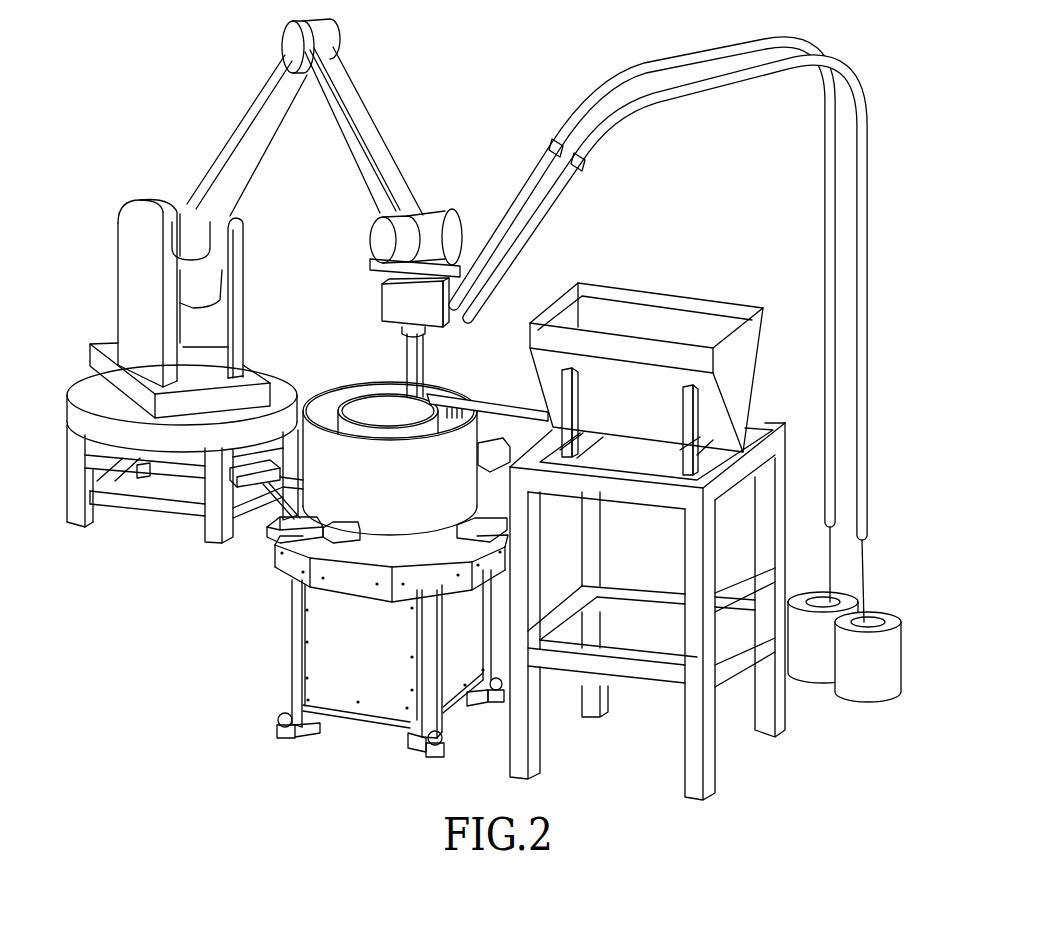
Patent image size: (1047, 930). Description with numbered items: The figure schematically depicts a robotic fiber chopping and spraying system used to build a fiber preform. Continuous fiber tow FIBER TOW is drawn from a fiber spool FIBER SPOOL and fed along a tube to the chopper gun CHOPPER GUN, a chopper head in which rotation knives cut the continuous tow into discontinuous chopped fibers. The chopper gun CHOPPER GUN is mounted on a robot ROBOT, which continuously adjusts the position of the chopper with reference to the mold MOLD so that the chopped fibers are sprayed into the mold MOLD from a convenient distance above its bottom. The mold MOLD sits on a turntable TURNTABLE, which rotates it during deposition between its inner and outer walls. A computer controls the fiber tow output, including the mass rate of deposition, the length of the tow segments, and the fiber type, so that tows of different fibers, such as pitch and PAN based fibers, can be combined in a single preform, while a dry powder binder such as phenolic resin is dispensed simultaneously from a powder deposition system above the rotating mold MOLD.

The robot ROBOT is at (128, 203).
The mold MOLD is at (371, 384).
The chopper gun CHOPPER GUN is at (458, 313).
The turntable TURNTABLE is at (290, 675).
The fiber tow FIBER TOW is at (848, 81).
The fiber spool FIBER SPOOL is at (892, 617).